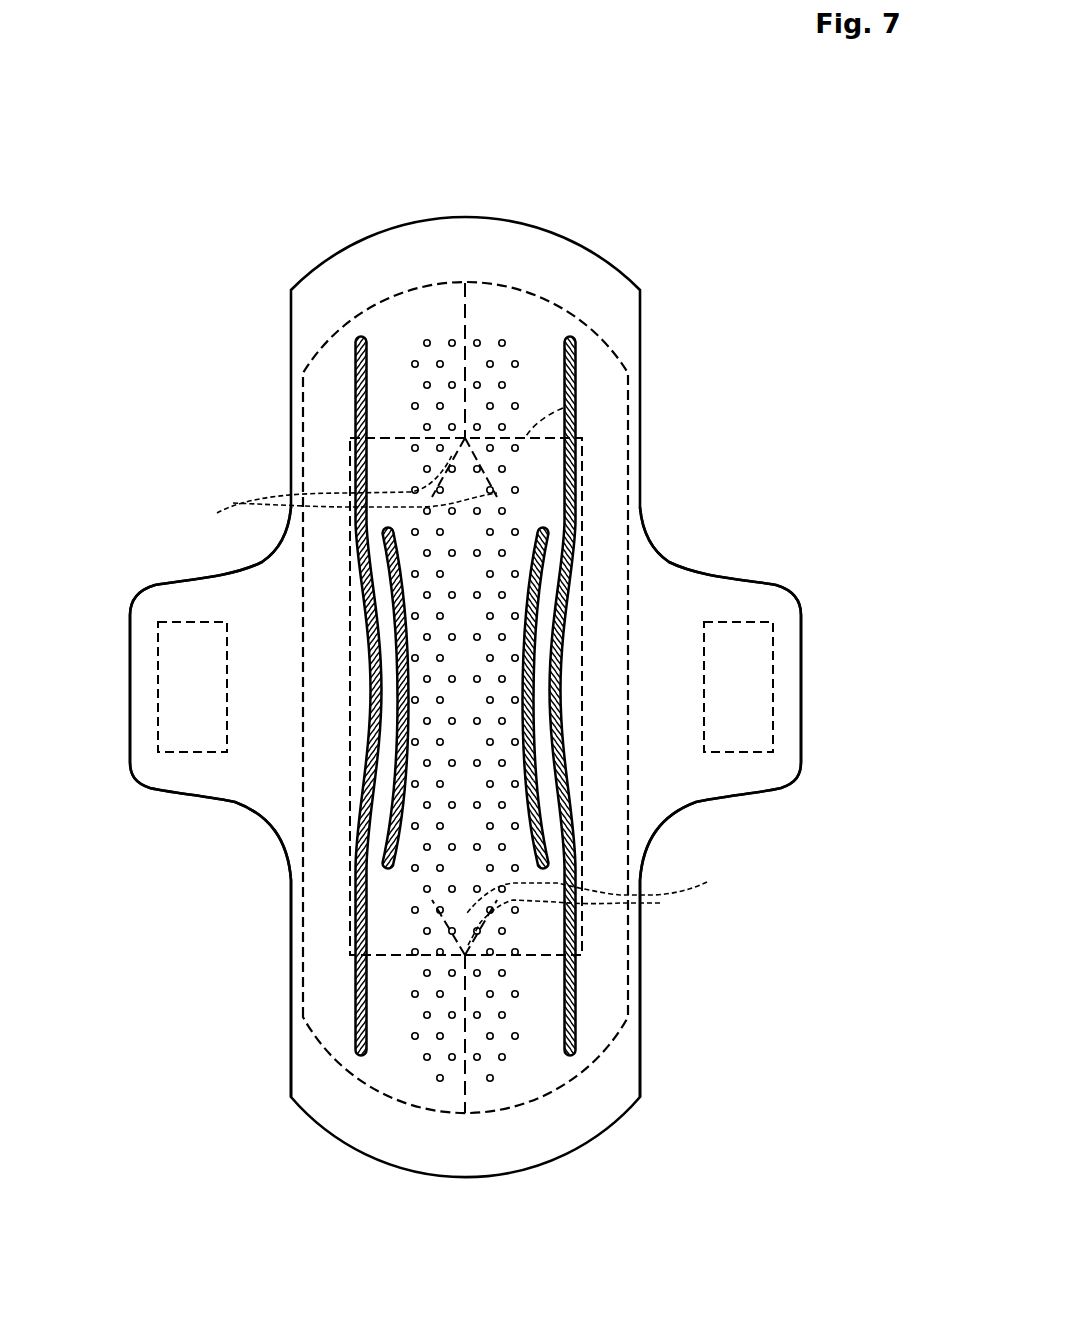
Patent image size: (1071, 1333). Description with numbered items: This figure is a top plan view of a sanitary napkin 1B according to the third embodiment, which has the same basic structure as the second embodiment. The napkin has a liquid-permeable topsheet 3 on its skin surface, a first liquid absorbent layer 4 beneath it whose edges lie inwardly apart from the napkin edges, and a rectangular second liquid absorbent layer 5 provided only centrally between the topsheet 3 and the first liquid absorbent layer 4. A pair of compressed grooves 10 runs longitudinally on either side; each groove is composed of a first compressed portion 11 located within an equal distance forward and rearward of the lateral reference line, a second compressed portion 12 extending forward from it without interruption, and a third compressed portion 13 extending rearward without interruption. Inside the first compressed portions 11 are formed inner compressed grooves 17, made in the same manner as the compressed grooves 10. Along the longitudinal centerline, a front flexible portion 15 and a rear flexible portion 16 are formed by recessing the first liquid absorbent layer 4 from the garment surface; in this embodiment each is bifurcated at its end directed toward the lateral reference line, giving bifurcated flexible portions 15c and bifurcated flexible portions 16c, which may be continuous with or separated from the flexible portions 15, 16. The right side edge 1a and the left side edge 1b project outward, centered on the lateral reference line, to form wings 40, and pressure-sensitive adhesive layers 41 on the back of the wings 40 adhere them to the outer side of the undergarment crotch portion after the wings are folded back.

The sanitary napkin 1B is at (695, 294).
The right side edge 1a is at (643, 940).
The left side edge 1b is at (291, 952).
The liquid-permeable topsheet 3 is at (573, 277).
The first liquid absorbent layer 4 is at (390, 296).
The second liquid absorbent layer 5 is at (578, 392).
The compressed groove 10 is at (353, 463).
The first compressed portion 11 is at (383, 701).
The second compressed portion 12 is at (353, 385).
The third compressed portion 13 is at (357, 983).
The front flexible portion 15 is at (462, 330).
The bifurcated flexible portion 15c is at (328, 496).
The rear flexible portion 16 is at (465, 1083).
The bifurcated flexible portion 16c is at (615, 907).
The inner compressed groove 17 is at (393, 803).
The wing 40 is at (150, 612).
The pressure-sensitive adhesive layer 41 is at (167, 700).